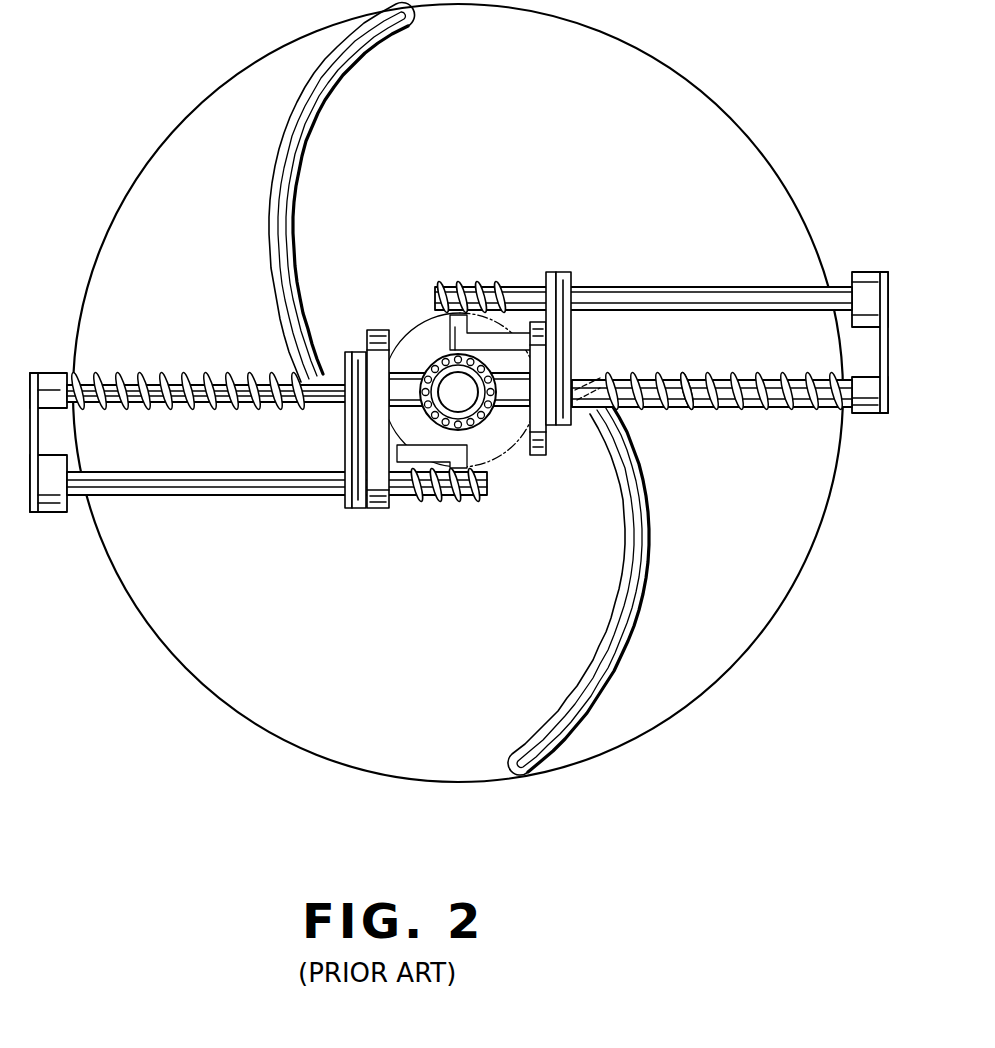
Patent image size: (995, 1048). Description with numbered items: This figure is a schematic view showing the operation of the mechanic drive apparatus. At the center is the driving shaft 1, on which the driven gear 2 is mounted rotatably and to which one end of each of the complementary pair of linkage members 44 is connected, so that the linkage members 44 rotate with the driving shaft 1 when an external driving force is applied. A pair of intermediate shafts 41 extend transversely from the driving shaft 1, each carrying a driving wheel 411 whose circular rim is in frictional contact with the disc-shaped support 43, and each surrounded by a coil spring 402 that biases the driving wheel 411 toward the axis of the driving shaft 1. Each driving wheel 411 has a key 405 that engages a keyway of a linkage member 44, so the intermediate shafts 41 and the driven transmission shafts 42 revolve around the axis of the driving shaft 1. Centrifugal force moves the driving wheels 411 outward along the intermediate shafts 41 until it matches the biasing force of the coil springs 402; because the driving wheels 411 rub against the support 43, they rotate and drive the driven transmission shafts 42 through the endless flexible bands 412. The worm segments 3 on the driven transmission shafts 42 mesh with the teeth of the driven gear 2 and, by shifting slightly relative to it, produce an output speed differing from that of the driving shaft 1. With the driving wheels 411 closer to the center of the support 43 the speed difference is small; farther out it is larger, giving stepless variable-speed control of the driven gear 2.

The driving shaft 1 is at (465, 400).
The driven gear 2 is at (420, 330).
The worm segments 3 is at (478, 280).
The intermediate shafts 41 is at (712, 412).
The driven transmission shafts 42 is at (712, 290).
The disc-shaped support 43 is at (790, 205).
The linkage members 44 is at (622, 527).
The coil spring 402 is at (690, 374).
The key 405 is at (590, 380).
The driving wheel 411 is at (548, 452).
The endless flexible bands 412 is at (563, 272).